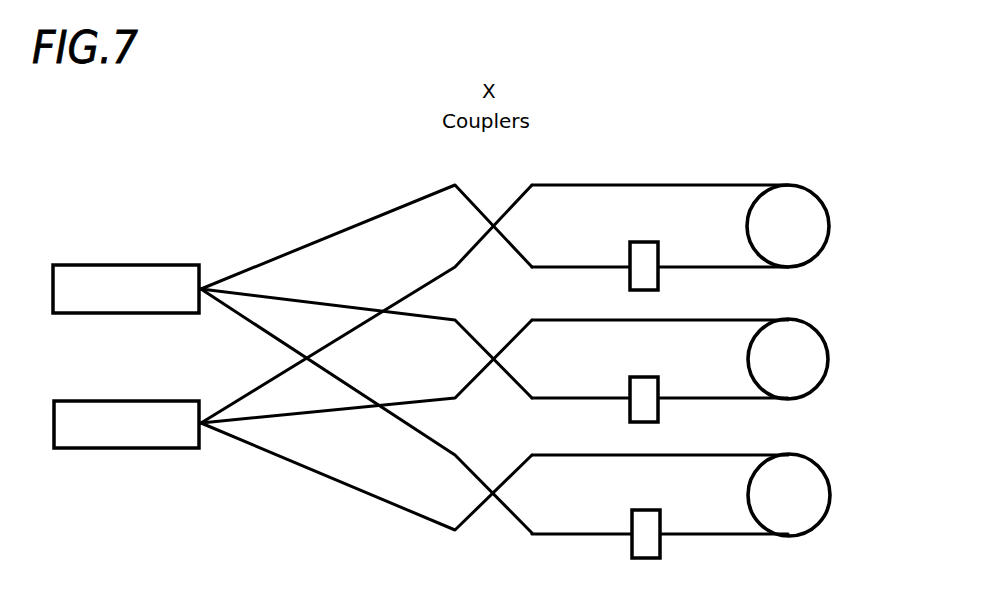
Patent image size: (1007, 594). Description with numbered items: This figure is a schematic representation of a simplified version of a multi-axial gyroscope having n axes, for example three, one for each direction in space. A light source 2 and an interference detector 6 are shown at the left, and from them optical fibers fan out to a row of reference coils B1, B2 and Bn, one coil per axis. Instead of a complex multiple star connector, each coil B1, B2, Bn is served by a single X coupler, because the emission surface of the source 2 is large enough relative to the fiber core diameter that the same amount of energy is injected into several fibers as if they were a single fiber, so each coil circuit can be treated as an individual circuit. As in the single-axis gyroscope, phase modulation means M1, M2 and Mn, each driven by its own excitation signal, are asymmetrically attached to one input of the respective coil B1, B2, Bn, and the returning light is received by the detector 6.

The light source 2 is at (126, 266).
The interference detector 6 is at (126, 404).
The reference coil B1 is at (712, 226).
The reference coil B2 is at (711, 359).
The reference coil Bn is at (716, 495).
The phase modulation means M1 is at (605, 252).
The phase modulation means M2 is at (605, 385).
The phase modulation means Mn is at (606, 521).